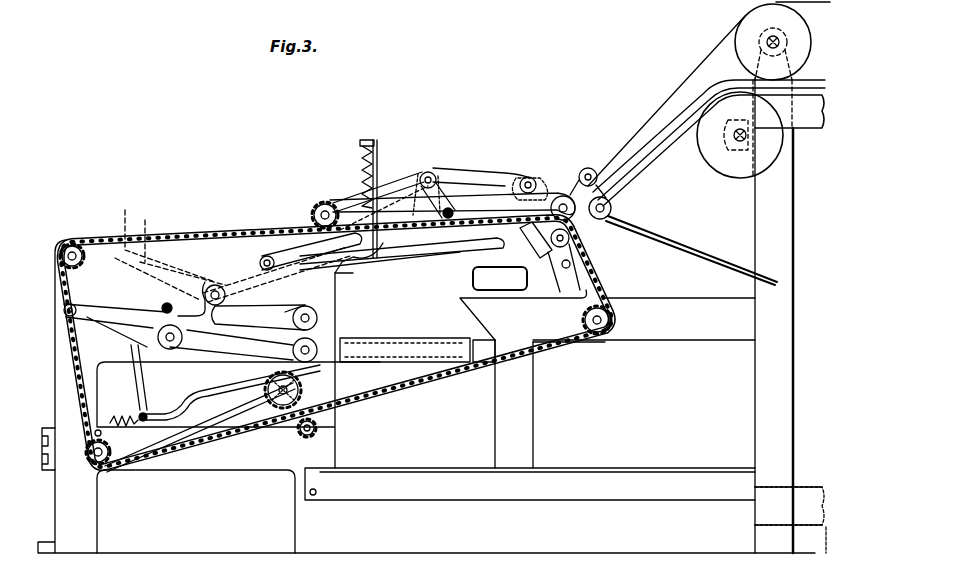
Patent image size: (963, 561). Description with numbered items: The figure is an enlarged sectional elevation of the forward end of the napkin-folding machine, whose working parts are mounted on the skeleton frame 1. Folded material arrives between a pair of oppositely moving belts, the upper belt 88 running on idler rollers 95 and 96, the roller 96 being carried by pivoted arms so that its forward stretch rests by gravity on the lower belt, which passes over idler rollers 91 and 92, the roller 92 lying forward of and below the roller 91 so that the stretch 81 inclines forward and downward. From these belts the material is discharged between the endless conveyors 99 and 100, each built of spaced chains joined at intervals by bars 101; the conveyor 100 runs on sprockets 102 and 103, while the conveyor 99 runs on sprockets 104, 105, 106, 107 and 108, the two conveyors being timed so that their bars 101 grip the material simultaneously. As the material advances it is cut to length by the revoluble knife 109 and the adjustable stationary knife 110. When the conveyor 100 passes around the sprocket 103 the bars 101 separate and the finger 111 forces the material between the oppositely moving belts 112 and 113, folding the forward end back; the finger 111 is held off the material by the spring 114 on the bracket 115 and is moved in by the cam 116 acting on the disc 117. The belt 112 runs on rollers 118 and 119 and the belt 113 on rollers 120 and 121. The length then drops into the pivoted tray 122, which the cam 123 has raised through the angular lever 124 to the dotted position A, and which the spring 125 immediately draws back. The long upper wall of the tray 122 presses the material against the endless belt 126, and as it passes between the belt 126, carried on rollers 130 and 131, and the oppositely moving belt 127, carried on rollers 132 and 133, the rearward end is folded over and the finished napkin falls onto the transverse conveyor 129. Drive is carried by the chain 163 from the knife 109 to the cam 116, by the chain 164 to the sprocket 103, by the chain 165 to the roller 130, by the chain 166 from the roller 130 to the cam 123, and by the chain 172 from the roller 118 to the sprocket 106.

The skeleton frame 1 is at (780, 322).
The belt run 81 is at (668, 148).
The belt 88 is at (672, 82).
The idler roller 91 is at (740, 172).
The idler roller 92 is at (613, 207).
The idler roller 95 is at (750, 26).
The idler roller 96 is at (594, 168).
The endless conveyor 99 is at (566, 352).
The endless conveyor 100 is at (480, 218).
The bars 101 is at (316, 219).
The sprocket 102 is at (560, 196).
The sprocket 103 is at (320, 204).
The sprocket 104 is at (604, 336).
The sprocket 105 is at (580, 262).
The sprocket 106 is at (69, 242).
The sprocket 107 is at (108, 464).
The sprocket 108 is at (318, 433).
The revoluble knife 109 is at (540, 176).
The adjustable stationary knife 110 is at (523, 303).
The finger 111 is at (380, 195).
The belt 112 is at (398, 278).
The belt 113 is at (278, 255).
The spring 114 is at (378, 148).
The bracket 115 is at (362, 146).
The cam 116 is at (436, 172).
The disc 117 is at (446, 200).
The roller 118 is at (212, 284).
The roller 119 is at (470, 260).
The roller 120 is at (258, 262).
The roller 121 is at (360, 262).
The pivoted tray 122 is at (118, 290).
The cam 123 is at (278, 406).
The angular lever 124 is at (208, 458).
The spring 125 is at (112, 418).
The endless belt 126 is at (208, 376).
The belt 127 is at (320, 316).
The conveyor 129 is at (456, 366).
The roller 130 is at (166, 352).
The roller 131 is at (318, 354).
The roller 132 is at (259, 328).
The roller 133 is at (315, 335).
The chain 163 is at (468, 168).
The chain 164 is at (386, 170).
The chain 165 is at (330, 300).
The chain 166 is at (200, 398).
The chain 172 is at (163, 244).
The raised position A is at (181, 245).